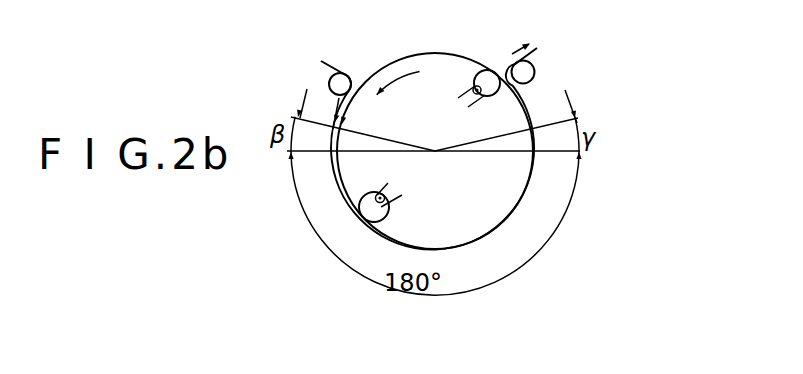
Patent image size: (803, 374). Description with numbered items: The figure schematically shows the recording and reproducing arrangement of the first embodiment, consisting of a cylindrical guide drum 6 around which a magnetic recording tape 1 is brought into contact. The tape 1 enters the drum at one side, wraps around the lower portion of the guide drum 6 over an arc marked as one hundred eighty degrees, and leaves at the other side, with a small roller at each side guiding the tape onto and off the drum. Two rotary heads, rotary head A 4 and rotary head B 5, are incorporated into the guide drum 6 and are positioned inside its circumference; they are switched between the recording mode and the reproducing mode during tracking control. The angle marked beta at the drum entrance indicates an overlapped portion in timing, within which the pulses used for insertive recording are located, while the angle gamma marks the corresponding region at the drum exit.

The magnetic recording tape 1 is at (335, 62).
The rotary head A 4 is at (369, 224).
The rotary head B 5 is at (487, 69).
The cylindrical guide drum 6 is at (403, 54).